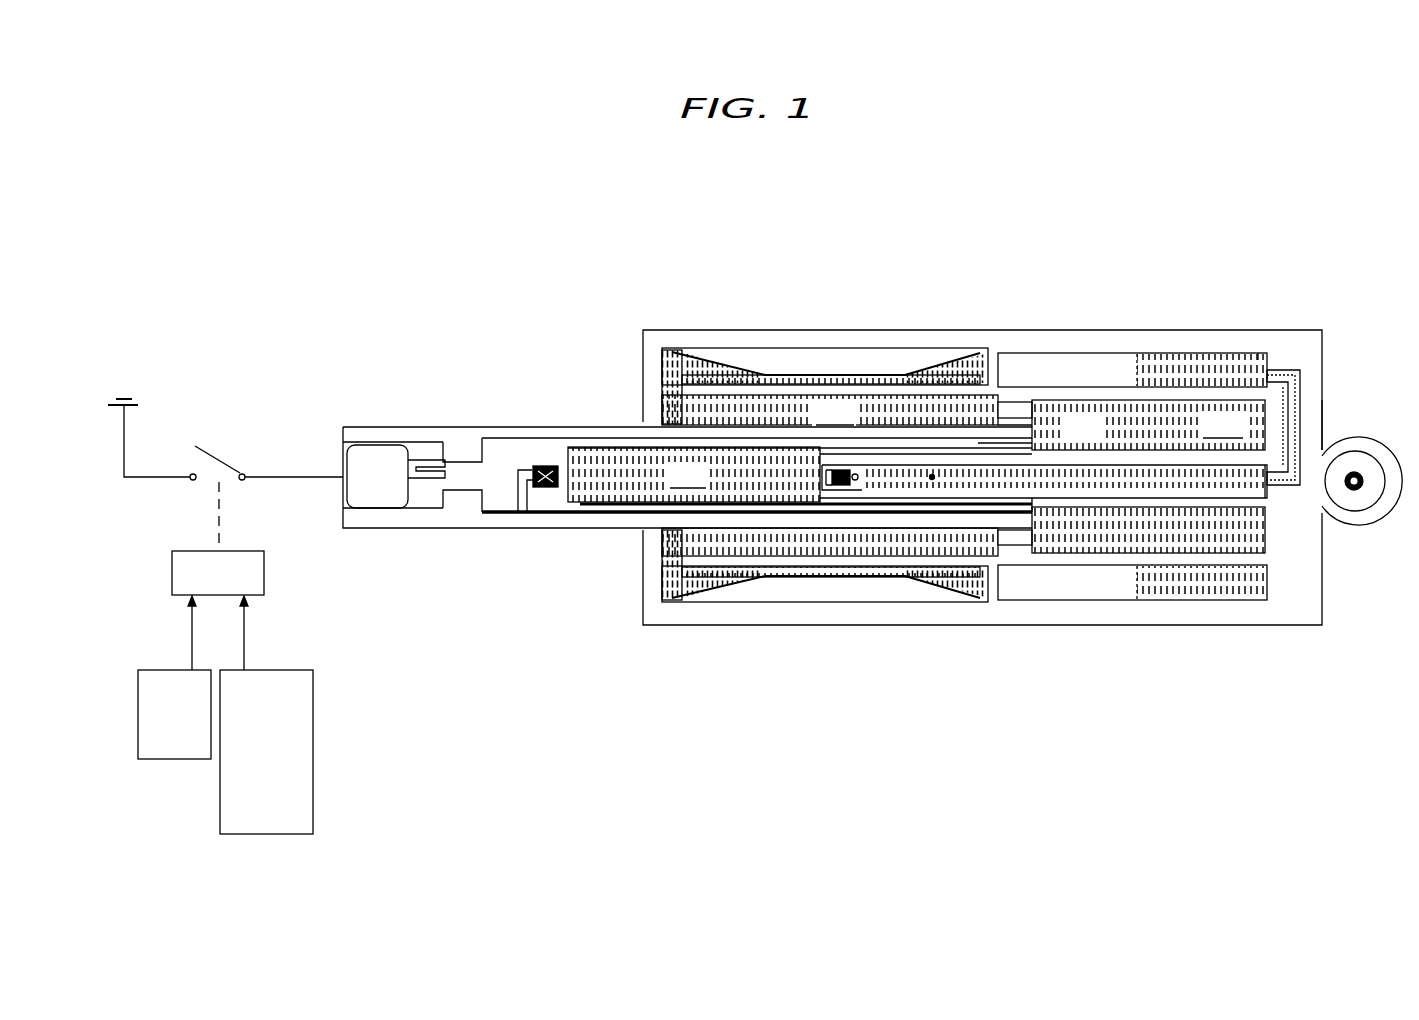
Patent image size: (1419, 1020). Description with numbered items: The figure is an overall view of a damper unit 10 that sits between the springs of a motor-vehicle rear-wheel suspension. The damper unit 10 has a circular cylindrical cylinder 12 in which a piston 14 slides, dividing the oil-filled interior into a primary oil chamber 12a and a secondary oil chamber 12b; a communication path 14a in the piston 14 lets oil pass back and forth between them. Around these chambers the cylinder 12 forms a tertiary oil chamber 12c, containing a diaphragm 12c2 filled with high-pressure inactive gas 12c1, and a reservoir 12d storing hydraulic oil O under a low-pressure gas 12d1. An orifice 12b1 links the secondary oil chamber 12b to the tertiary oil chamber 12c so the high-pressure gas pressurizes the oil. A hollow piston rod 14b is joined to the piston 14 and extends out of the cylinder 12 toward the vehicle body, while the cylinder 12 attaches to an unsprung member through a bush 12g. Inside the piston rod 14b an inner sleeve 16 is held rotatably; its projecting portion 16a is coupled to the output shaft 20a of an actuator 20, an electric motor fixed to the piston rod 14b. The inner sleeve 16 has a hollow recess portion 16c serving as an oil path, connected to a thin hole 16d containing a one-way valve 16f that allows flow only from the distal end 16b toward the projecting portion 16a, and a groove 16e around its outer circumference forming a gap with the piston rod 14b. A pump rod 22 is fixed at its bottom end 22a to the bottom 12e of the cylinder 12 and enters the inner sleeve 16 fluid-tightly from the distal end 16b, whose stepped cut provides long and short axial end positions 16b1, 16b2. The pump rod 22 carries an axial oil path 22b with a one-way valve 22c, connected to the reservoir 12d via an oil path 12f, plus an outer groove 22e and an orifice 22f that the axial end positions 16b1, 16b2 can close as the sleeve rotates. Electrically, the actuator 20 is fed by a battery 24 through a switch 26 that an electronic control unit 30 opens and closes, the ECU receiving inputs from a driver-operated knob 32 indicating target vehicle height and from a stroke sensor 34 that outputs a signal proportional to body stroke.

The damper unit 10 is at (962, 298).
The cylinder 12 is at (875, 329).
The primary oil chamber 12a is at (1201, 425).
The secondary oil chamber 12b is at (847, 475).
The orifice 12b1 is at (672, 382).
The tertiary oil chamber 12c is at (975, 372).
The high-pressure inactive gas 12c1 is at (790, 374).
The diaphragm 12c2 is at (716, 356).
The reservoir 12d is at (1195, 362).
The low-pressure gas 12d1 is at (1060, 360).
The bottom 12e is at (1324, 418).
The oil path 12f is at (1300, 388).
The bush 12g is at (1398, 502).
The piston 14 is at (548, 420).
The communication path 14a is at (1034, 416).
The piston rod 14b is at (576, 436).
The inner sleeve 16 is at (520, 433).
The projecting portion 16a is at (462, 447).
The distal end 16b is at (1090, 690).
The axial end position 16b1 is at (1040, 510).
The axial end position 16b2 is at (978, 443).
The hollow recess portion 16c is at (694, 474).
The thin hole 16d is at (518, 514).
The groove 16e is at (585, 516).
The one-way valve 16f is at (560, 477).
The actuator 20 is at (383, 462).
The output shaft 20a is at (427, 480).
The pump rod 22 is at (1170, 512).
The bottom end 22a is at (1255, 478).
The oil path 22b is at (1238, 495).
The one-way valve 22c is at (830, 478).
The groove 22e is at (850, 506).
The orifice 22f is at (932, 480).
The battery 24 is at (132, 402).
The switch 26 is at (200, 448).
The electronic control unit 30 is at (264, 567).
The knob 32 is at (163, 670).
The stroke sensor 34 is at (285, 670).
The hydraulic oil O is at (1260, 353).